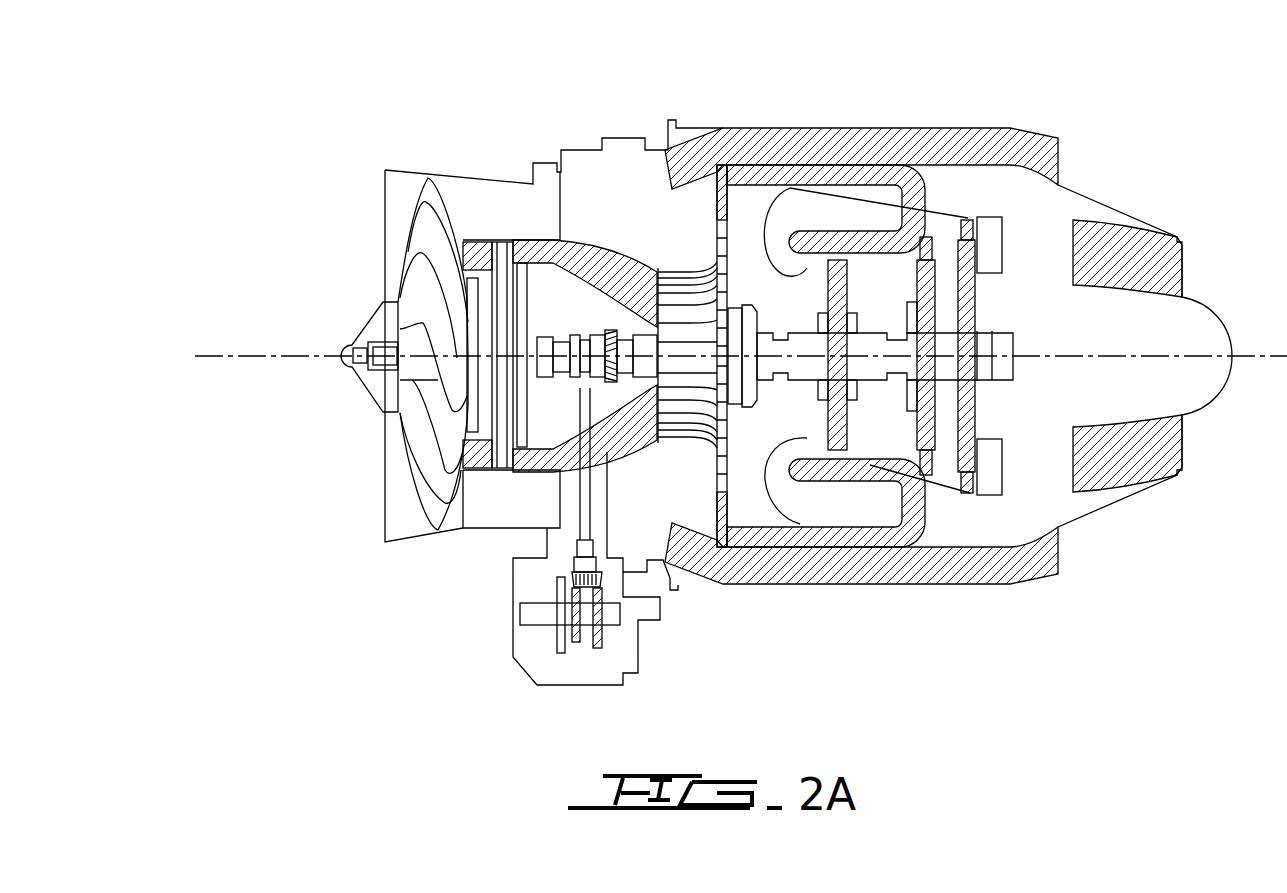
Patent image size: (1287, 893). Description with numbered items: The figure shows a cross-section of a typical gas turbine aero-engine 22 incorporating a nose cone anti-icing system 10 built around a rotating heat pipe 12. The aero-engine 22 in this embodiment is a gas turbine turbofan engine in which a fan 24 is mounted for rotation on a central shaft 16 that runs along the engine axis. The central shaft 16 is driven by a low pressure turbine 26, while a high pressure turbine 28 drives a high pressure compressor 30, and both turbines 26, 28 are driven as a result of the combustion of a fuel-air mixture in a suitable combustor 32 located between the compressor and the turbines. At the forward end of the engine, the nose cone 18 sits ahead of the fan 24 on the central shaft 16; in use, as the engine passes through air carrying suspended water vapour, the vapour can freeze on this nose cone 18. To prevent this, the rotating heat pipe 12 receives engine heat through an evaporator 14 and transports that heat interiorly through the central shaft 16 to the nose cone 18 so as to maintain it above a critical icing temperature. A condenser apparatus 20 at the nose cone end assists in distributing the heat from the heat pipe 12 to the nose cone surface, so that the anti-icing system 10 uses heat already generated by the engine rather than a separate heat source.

The nose cone anti-icing system 10 is at (286, 457).
The rotating heat pipe 12 is at (383, 352).
The evaporator 14 is at (528, 430).
The central shaft 16 is at (381, 362).
The nose cone 18 is at (383, 303).
The condenser apparatus 20 is at (360, 346).
The aero-engine 22 is at (341, 586).
The fan 24 is at (435, 198).
The low pressure turbine 26 is at (932, 237).
The high pressure turbine 28 is at (843, 258).
The high pressure compressor 30 is at (717, 257).
The combustor 32 is at (867, 507).